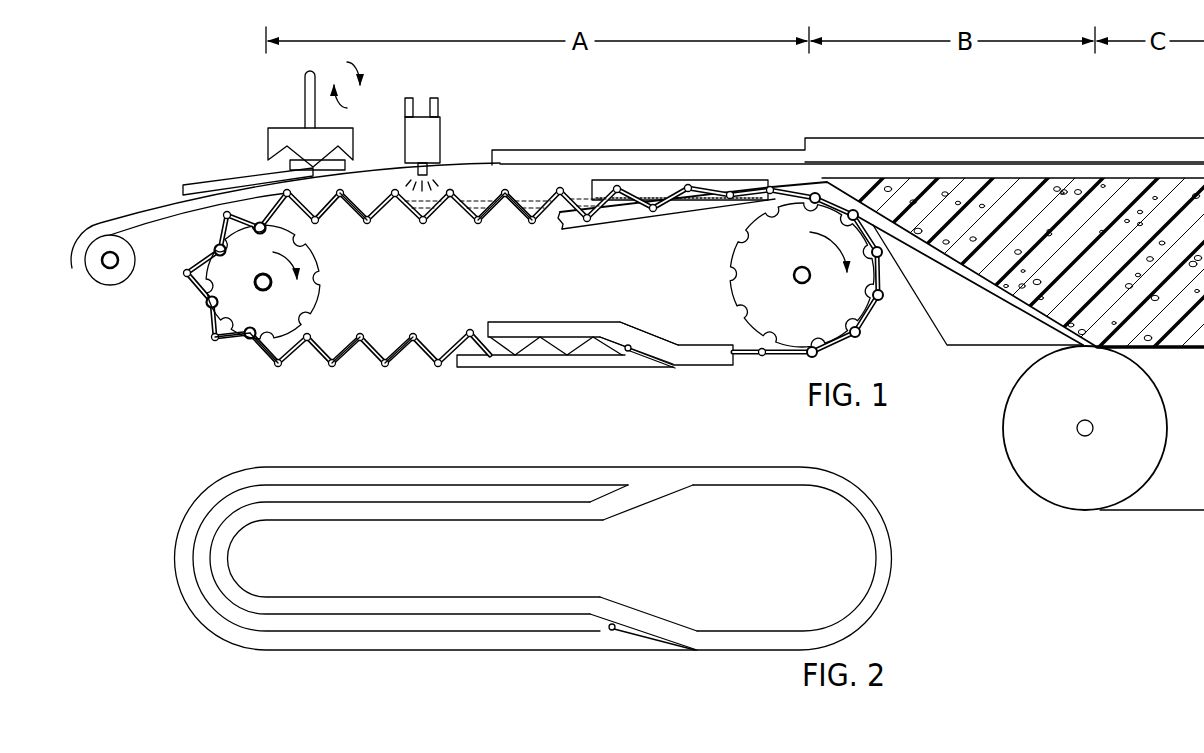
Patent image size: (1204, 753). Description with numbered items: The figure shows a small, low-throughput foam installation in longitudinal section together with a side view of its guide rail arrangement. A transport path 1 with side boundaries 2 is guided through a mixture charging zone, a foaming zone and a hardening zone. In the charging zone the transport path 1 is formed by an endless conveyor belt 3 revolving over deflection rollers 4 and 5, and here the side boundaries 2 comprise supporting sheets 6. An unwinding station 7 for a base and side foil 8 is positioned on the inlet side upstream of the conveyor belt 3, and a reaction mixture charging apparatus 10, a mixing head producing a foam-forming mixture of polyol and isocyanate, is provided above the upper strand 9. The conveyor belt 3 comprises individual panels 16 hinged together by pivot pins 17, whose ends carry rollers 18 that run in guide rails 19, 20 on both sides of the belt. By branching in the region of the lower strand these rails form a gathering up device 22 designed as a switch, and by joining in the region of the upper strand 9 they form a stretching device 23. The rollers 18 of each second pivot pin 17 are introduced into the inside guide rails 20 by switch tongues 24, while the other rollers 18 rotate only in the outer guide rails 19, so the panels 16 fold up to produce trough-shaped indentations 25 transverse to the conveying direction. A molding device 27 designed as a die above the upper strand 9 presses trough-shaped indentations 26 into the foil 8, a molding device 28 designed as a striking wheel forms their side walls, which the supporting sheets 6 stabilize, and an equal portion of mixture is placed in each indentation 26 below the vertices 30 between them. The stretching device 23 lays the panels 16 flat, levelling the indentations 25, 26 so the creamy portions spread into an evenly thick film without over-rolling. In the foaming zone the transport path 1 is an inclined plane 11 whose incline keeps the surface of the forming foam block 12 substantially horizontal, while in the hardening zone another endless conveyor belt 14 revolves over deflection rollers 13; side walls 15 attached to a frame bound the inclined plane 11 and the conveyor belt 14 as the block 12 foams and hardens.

In FIG. 1, the transport path 1 is at (621, 126).
In FIG. 1, the side boundaries 2 is at (564, 147).
In FIG. 1, the endless conveyor belt 3 is at (189, 345).
In FIG. 1, the deflection roller 4 is at (314, 260).
In FIG. 1, the deflection roller 5 is at (727, 256).
In FIG. 1, the supporting sheets 6 is at (210, 183).
In FIG. 1, the unwinding station 7 is at (115, 280).
In FIG. 1, the base and side foil 8 is at (158, 217).
In FIG. 1, the upper strand 9 is at (472, 228).
In FIG. 1, the reaction mixture charging apparatus 10 is at (430, 128).
In FIG. 1, the inclined plane 11 is at (990, 290).
In FIG. 1, the foam block 12 is at (1105, 212).
In FIG. 1, the deflection rollers 13 is at (1062, 490).
In FIG. 1, the endless conveyor belt 14 is at (1145, 512).
In FIG. 1, the side walls 15 is at (1060, 150).
In FIG. 1, the panels 16 is at (343, 353).
In FIG. 1, the pivot pins 17 is at (280, 364).
In FIG. 1, the rollers 18 is at (248, 334).
In FIG. 1, the outer guide rails 19 is at (720, 183).
In FIG. 2, the outer guide rails 19 is at (518, 475).
In FIG. 1, the inside guide rails 20 is at (593, 324).
In FIG. 2, the inside guide rails 20 is at (523, 605).
In FIG. 1, the gathering up device 22 is at (643, 325).
In FIG. 2, the gathering up device 22 is at (655, 609).
In FIG. 1, the stretching device 23 is at (756, 173).
In FIG. 2, the stretching device 23 is at (652, 508).
In FIG. 1, the switch tongues 24 is at (640, 358).
In FIG. 2, the switch tongues 24 is at (640, 637).
In FIG. 1, the trough-shaped indentations 25 is at (413, 353).
In FIG. 1, the trough-shaped indentations 26 is at (365, 196).
In FIG. 1, the molding device 27 is at (297, 131).
In FIG. 1, the molding device 28 is at (503, 180).
In FIG. 1, the vertices 30 is at (453, 185).